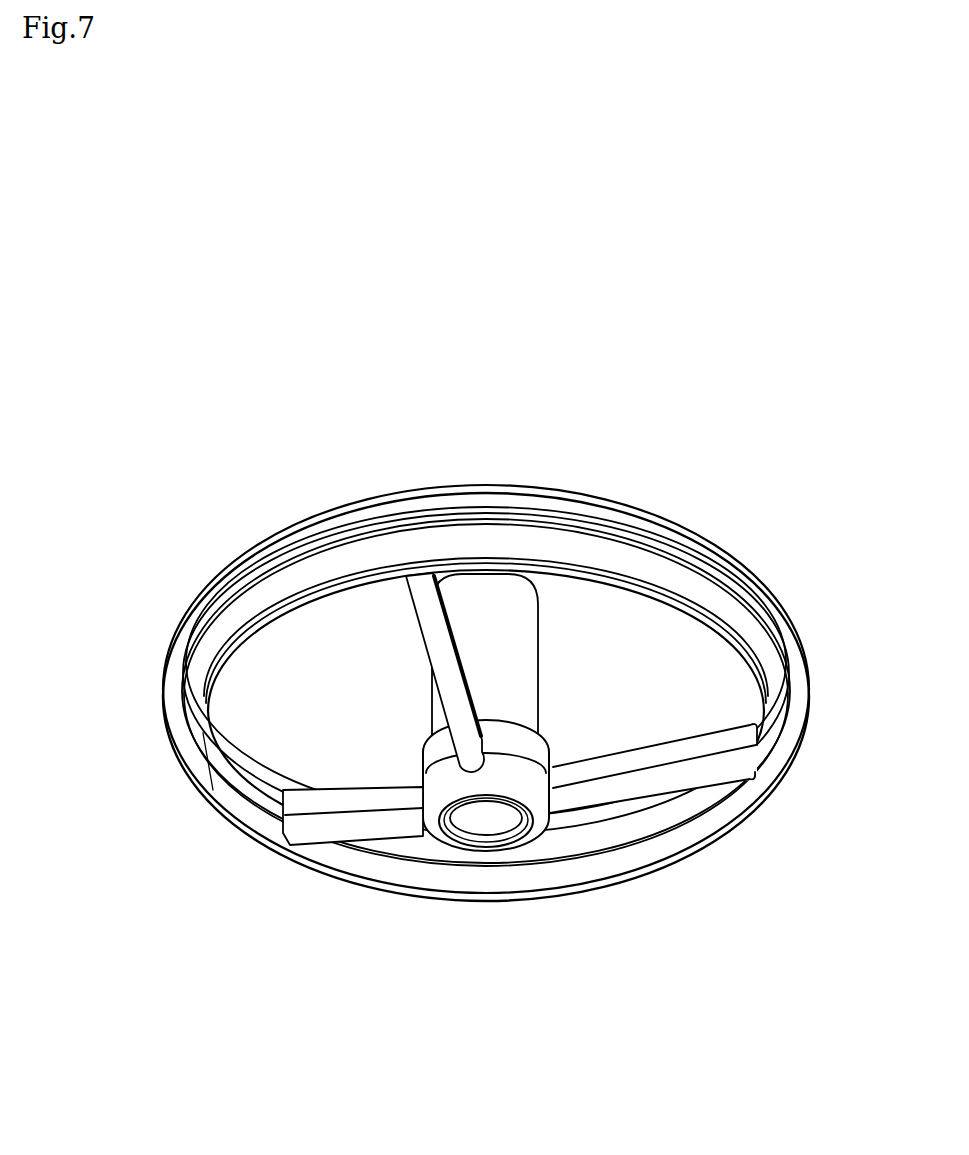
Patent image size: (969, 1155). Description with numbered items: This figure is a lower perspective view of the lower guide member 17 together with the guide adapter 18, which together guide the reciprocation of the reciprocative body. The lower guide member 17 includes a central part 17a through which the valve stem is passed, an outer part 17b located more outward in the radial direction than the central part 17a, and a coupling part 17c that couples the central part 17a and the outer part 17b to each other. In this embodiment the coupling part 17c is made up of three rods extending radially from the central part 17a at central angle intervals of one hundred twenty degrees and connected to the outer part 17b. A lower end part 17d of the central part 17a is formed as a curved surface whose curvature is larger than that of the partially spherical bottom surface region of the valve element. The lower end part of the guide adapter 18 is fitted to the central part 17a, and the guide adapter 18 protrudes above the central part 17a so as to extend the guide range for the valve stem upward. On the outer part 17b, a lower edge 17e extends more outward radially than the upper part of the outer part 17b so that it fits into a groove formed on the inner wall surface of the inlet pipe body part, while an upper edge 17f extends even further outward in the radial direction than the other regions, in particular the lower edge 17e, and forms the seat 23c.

The lower guide member 17 is at (462, 662).
The central part 17a is at (494, 850).
The outer part 17b is at (753, 634).
The coupling part 17c is at (630, 787).
The lower end part 17d is at (433, 813).
The lower edge 17e is at (242, 822).
The upper edge 17f is at (177, 623).
The seat 23c is at (430, 697).
The guide adapter 18 is at (538, 640).